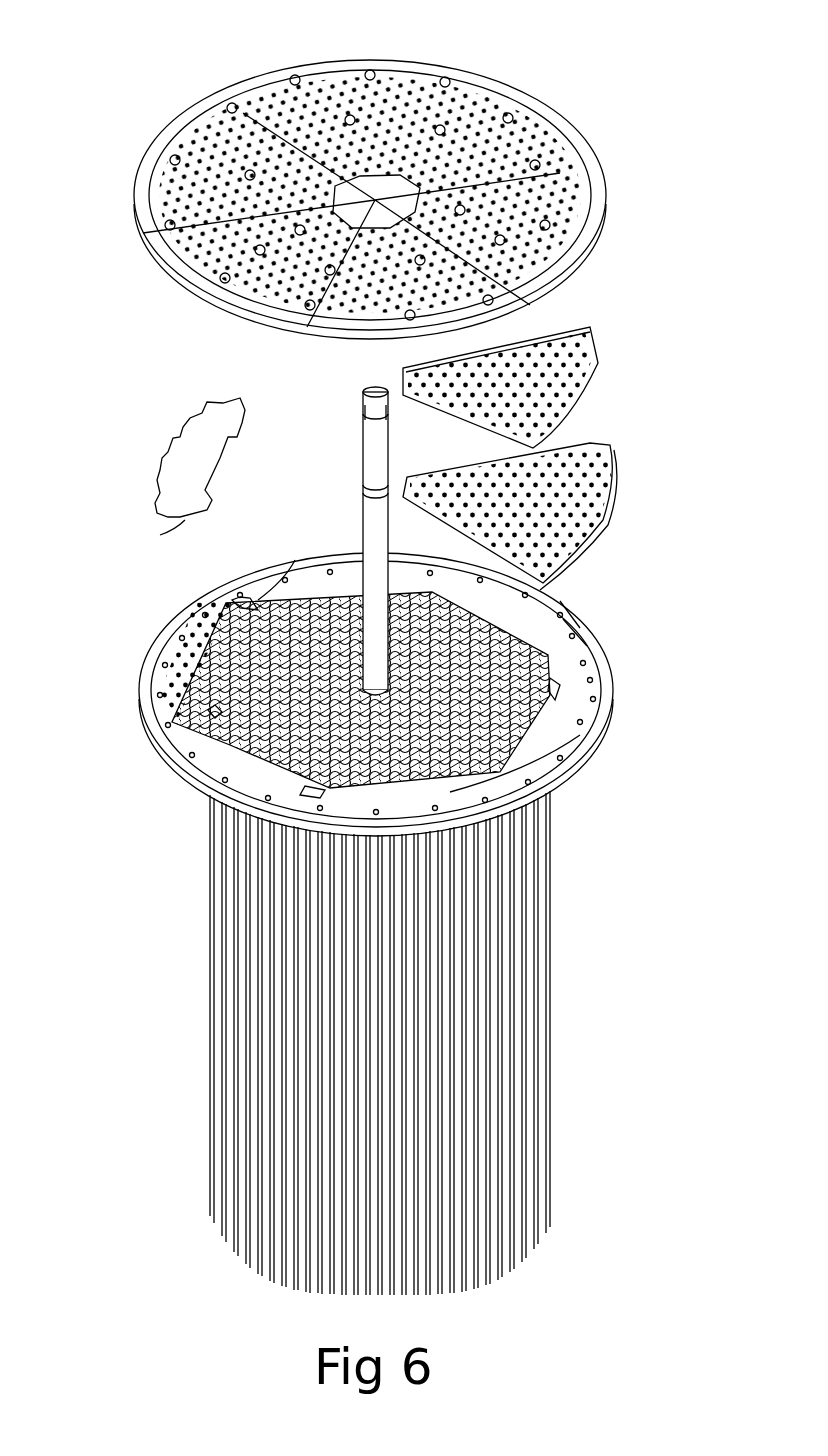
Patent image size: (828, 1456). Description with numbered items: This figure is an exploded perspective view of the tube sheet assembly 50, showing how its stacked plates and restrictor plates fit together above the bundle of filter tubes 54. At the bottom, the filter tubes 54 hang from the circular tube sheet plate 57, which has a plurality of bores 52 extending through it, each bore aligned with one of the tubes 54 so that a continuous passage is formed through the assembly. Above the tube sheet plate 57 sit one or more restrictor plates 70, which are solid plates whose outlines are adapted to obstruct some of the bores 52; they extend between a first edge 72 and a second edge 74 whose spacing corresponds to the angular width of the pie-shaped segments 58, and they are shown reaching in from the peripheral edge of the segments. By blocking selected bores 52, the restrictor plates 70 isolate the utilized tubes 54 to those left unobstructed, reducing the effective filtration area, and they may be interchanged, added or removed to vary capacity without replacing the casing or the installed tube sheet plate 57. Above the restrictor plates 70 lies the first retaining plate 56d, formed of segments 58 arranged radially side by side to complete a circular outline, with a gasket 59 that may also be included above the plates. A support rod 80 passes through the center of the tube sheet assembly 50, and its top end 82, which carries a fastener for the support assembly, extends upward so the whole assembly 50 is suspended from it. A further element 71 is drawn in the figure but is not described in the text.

The tube sheet assembly 50 is at (586, 84).
The bores 52 is at (530, 625).
The filter tubes 54 is at (207, 962).
The retaining plate 56d is at (592, 215).
The tube sheet plate 57 is at (607, 750).
The segments 58 is at (297, 90).
The gasket 59 is at (600, 160).
The restrictor plates 70 is at (172, 436).
The spacer 71 is at (262, 570).
The first edge 72 is at (240, 398).
The second edge 74 is at (180, 517).
The support rod 80 is at (362, 448).
The top end 82 is at (366, 385).